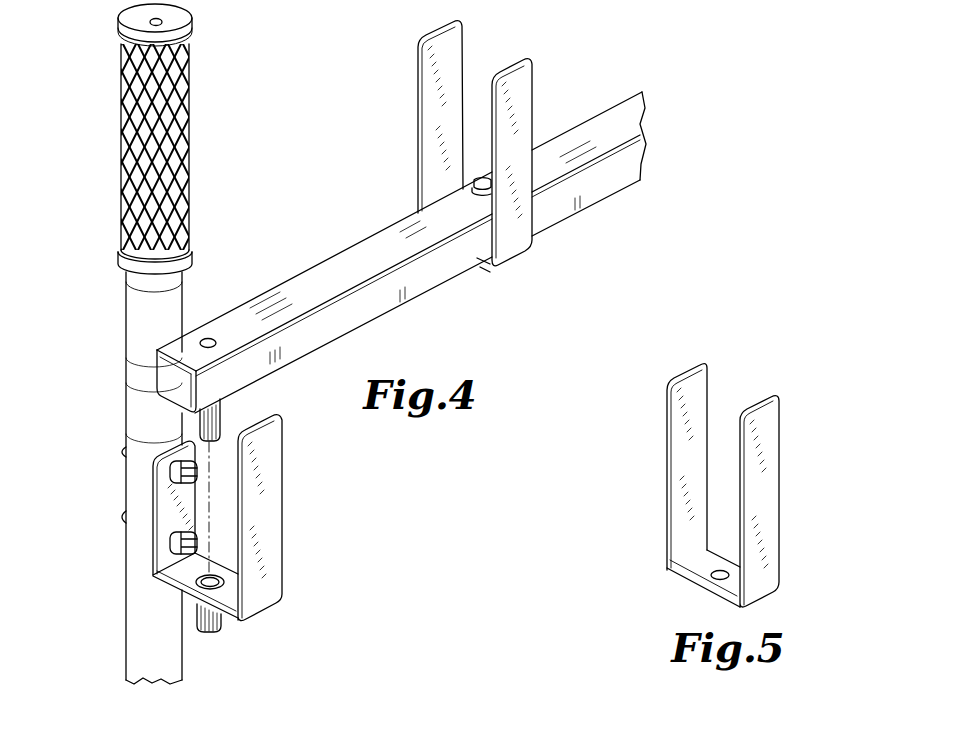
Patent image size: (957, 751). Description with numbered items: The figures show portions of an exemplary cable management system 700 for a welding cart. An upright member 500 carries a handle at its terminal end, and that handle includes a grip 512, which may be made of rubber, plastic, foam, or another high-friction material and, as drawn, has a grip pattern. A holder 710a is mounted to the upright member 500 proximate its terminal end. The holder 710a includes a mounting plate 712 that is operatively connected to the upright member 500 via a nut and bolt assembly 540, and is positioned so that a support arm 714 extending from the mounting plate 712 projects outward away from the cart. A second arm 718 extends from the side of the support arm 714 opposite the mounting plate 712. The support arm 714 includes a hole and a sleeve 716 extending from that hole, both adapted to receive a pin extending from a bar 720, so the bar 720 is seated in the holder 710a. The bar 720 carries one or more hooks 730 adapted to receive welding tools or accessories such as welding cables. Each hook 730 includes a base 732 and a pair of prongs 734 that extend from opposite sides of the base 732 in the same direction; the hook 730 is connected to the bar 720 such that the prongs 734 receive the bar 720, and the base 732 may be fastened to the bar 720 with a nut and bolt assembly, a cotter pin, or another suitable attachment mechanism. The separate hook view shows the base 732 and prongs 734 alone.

In FIG. 4, the upright member 500 is at (135, 654).
In FIG. 4, the grip 512 is at (119, 126).
In FIG. 4, the nut and bolt assembly 540 is at (157, 572).
In FIG. 4, the cable management system 700 is at (295, 275).
In FIG. 4, the holder 710a is at (292, 564).
In FIG. 4, the mounting plate 712 is at (168, 497).
In FIG. 4, the support arm 714 is at (158, 577).
In FIG. 4, the sleeve 716 is at (220, 630).
In FIG. 4, the second arm 718 is at (272, 465).
In FIG. 4, the bar 720 is at (392, 236).
In FIG. 5, the hook 730 is at (730, 485).
In FIG. 5, the base 732 is at (695, 570).
In FIG. 4, the prongs 734 is at (418, 76).
In FIG. 5, the prongs 734 is at (666, 445).